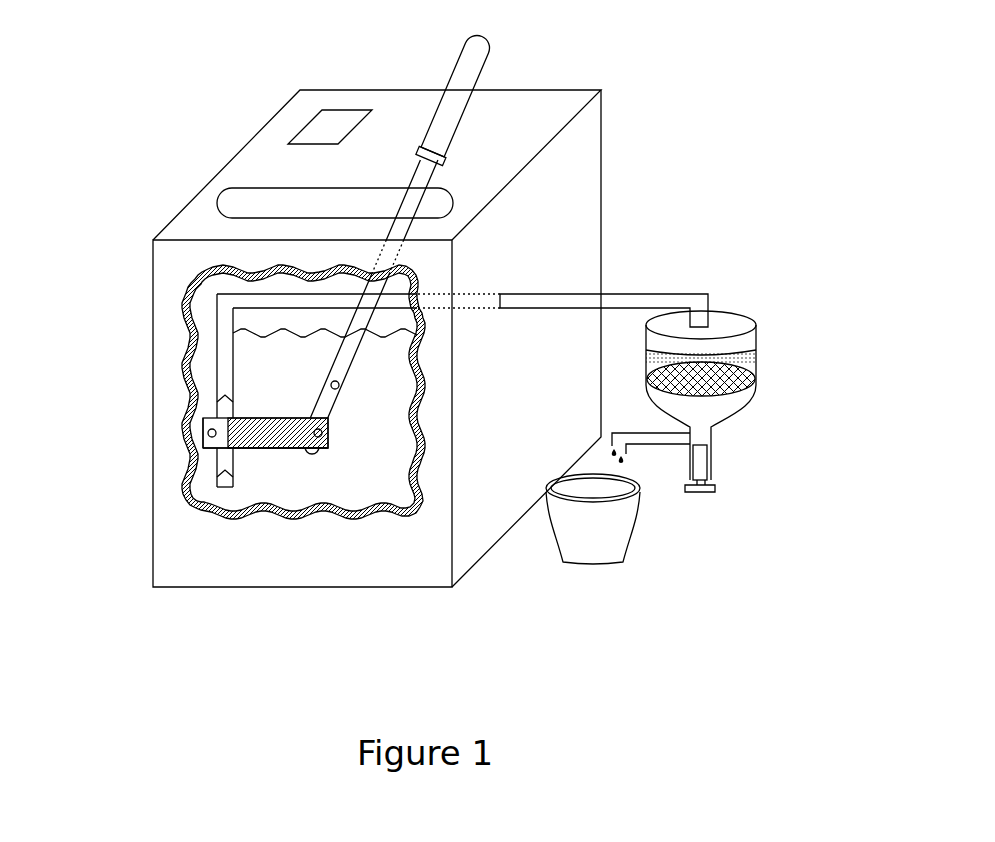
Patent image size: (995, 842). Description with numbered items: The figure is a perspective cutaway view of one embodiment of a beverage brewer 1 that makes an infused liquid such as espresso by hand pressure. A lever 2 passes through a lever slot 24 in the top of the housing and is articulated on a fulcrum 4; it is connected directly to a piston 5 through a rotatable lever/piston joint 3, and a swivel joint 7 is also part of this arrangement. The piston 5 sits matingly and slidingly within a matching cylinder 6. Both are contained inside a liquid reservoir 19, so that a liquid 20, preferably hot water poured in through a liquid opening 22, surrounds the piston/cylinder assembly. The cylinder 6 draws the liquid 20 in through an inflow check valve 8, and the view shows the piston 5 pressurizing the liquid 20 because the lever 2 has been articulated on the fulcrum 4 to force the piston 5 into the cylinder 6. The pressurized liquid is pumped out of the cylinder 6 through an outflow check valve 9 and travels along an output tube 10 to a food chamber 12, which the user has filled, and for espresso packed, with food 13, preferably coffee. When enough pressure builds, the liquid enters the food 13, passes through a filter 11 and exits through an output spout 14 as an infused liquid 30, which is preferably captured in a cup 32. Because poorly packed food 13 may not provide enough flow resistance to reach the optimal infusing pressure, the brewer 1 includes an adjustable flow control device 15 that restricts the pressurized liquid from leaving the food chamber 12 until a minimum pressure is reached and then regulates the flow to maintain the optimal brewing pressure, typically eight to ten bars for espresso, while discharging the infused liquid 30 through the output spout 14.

The beverage brewer 1 is at (252, 141).
The lever 2 is at (480, 53).
The rotatable lever/piston joint 3 is at (322, 448).
The fulcrum 4 is at (339, 389).
The piston 5 is at (240, 448).
The cylinder 6 is at (207, 442).
The swivel joint 7 is at (208, 432).
The inflow check valve 8 is at (225, 480).
The outflow check valve 9 is at (222, 388).
The output tube 10 is at (217, 295).
The filter 11 is at (757, 372).
The food chamber 12 is at (745, 342).
The food 13 is at (710, 350).
The output spout 14 is at (667, 442).
The flow control device 15 is at (703, 468).
The liquid reservoir 19 is at (370, 462).
The liquid 20 is at (230, 337).
The liquid opening 22 is at (332, 118).
The lever slot 24 is at (233, 200).
The infused liquid 30 is at (627, 450).
The cup 32 is at (603, 560).